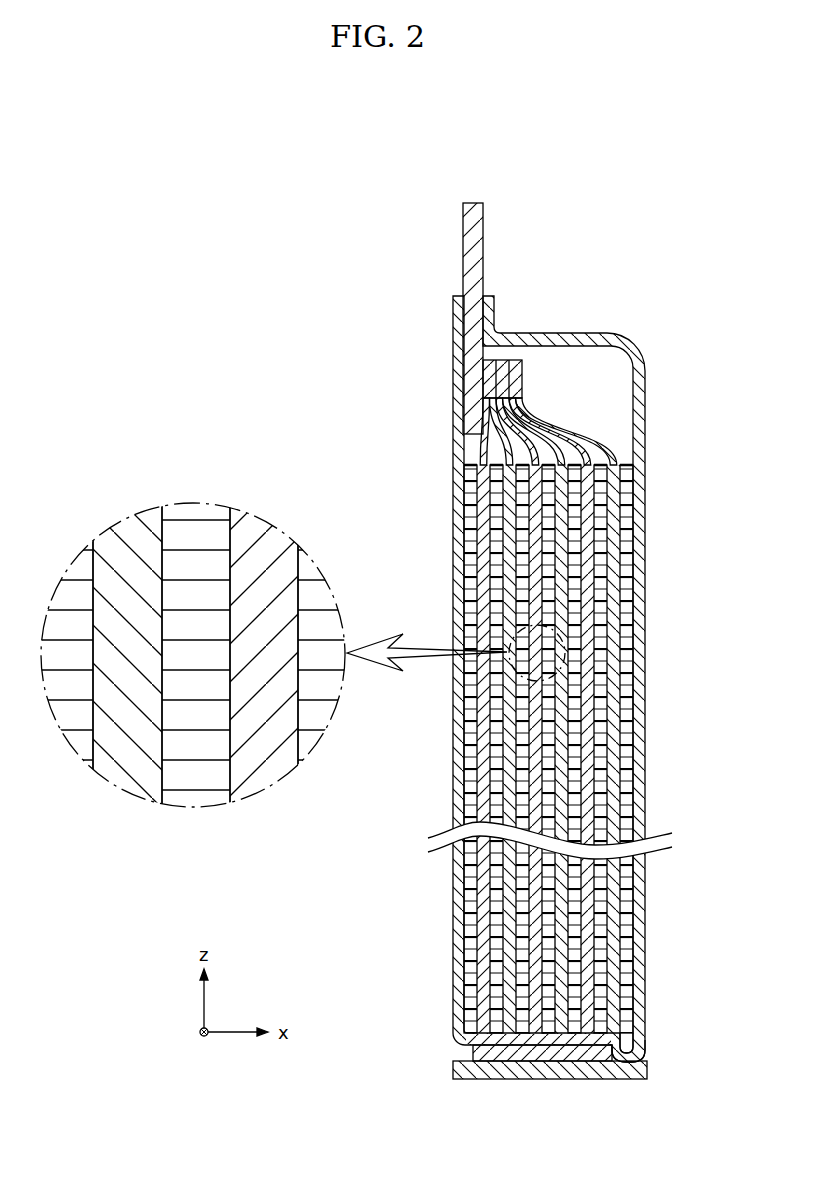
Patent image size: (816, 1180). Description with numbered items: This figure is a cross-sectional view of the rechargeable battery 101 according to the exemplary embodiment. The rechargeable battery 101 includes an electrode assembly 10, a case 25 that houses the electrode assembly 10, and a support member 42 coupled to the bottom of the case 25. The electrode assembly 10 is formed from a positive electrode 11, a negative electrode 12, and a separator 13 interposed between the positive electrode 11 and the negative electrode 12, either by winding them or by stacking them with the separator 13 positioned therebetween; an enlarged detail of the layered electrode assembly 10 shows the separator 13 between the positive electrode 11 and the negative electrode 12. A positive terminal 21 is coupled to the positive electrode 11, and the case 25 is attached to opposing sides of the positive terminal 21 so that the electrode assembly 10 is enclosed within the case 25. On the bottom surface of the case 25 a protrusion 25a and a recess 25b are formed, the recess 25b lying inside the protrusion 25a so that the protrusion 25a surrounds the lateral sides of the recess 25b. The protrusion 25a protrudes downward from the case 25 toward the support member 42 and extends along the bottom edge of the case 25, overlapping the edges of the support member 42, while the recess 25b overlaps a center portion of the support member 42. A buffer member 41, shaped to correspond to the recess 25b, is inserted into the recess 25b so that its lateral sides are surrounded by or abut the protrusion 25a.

The rechargeable battery 101 is at (398, 177).
The positive terminal 21 is at (463, 228).
The case 25 is at (578, 705).
The protrusion 25a is at (642, 1052).
The recess 25b is at (543, 1048).
The electrode assembly 10 is at (588, 416).
The positive electrode 11 is at (266, 523).
The negative electrode 12 is at (130, 523).
The separator 13 is at (200, 507).
The buffer member 41 is at (473, 1050).
The support member 42 is at (602, 1075).